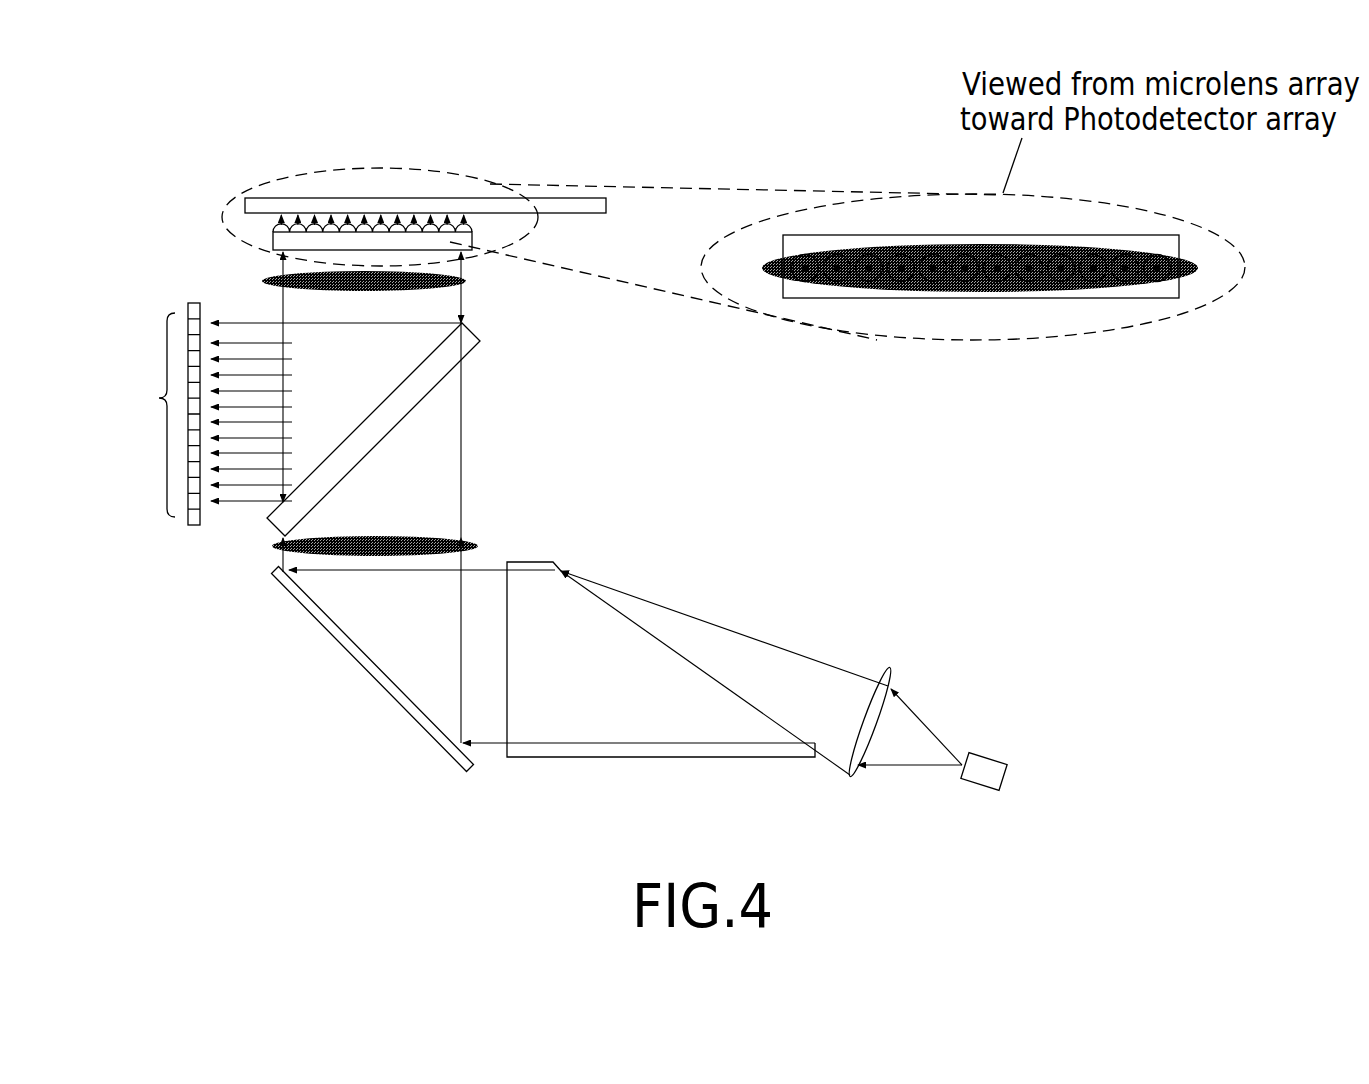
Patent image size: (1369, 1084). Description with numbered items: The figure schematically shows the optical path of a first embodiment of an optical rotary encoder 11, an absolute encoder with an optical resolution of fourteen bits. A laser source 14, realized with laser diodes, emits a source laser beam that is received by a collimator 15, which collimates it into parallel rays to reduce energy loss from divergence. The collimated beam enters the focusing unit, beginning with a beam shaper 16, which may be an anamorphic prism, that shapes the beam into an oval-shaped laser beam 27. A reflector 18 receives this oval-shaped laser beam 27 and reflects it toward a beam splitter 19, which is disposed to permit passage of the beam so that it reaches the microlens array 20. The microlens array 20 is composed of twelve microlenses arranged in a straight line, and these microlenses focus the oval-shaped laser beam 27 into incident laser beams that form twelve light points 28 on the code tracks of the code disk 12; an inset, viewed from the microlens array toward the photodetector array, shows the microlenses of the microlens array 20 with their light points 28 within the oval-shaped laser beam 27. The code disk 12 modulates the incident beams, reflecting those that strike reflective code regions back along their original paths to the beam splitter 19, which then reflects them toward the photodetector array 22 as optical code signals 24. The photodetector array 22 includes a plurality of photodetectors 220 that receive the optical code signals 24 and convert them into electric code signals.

The optical rotary encoder 11 is at (131, 177).
The code disk 12 is at (607, 196).
The laser source 14 is at (977, 749).
The collimator 15 is at (891, 661).
The beam shaper 16 is at (578, 759).
The reflector 18 is at (359, 665).
The beam splitter 19 is at (269, 527).
The microlens array 20 is at (271, 234).
The photodetector array 22 is at (193, 527).
The optical code signals 24 is at (251, 318).
The oval-shaped laser beam 27 is at (477, 282).
The light points 28 is at (470, 219).
The photodetectors 220 is at (139, 415).